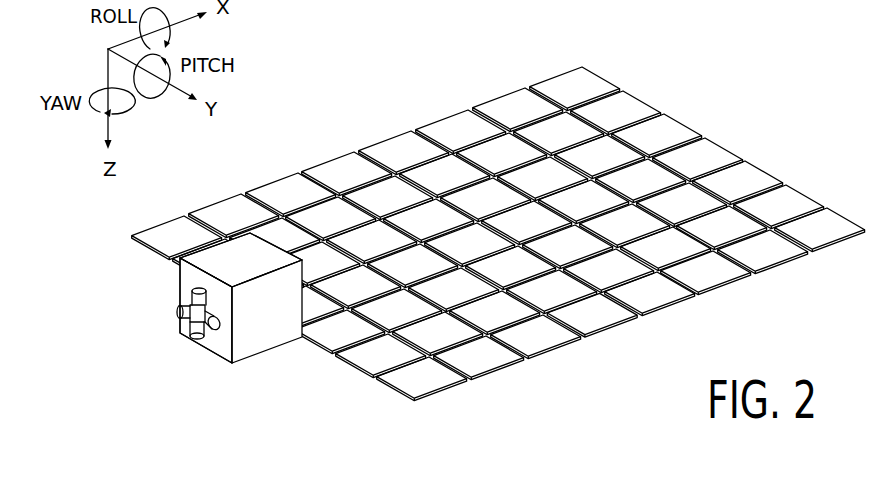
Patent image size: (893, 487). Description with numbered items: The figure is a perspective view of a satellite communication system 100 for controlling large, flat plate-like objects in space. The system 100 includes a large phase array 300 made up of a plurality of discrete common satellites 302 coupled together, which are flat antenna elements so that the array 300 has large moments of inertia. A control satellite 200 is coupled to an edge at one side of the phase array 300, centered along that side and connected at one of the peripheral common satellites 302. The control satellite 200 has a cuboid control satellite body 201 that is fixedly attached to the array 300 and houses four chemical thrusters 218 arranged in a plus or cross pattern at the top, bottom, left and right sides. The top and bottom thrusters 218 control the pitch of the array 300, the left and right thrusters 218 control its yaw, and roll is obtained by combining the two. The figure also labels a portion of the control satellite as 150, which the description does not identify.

The satellite communication system 100 is at (165, 287).
The spacecraft body top surface 150 is at (221, 262).
The control satellite 200 is at (213, 287).
The control satellite body 201 is at (222, 343).
The chemical thrusters 218 is at (180, 320).
The phase array 300 is at (498, 201).
The common satellites 302 is at (630, 322).